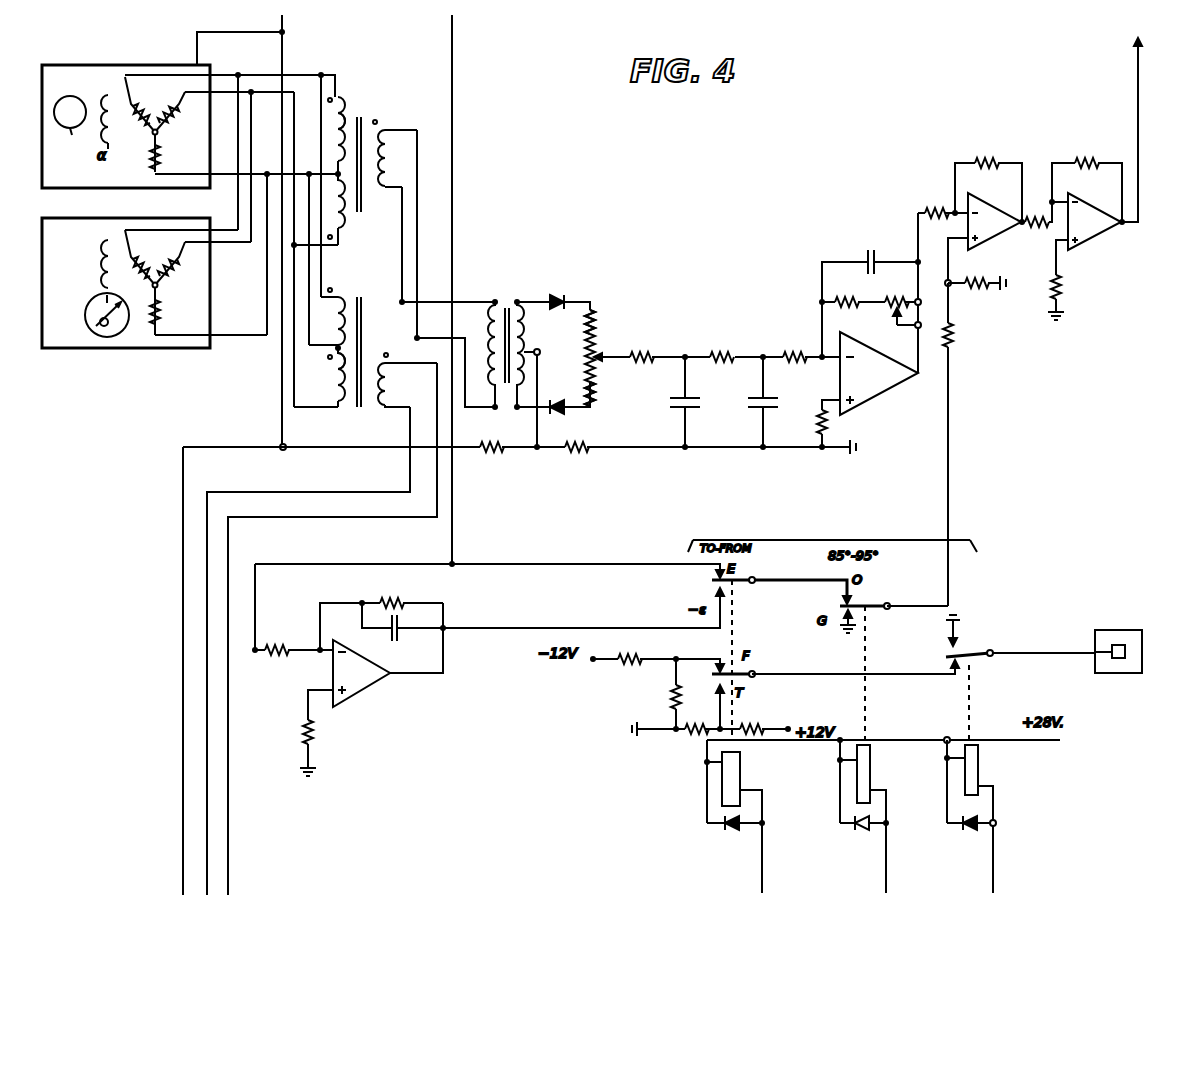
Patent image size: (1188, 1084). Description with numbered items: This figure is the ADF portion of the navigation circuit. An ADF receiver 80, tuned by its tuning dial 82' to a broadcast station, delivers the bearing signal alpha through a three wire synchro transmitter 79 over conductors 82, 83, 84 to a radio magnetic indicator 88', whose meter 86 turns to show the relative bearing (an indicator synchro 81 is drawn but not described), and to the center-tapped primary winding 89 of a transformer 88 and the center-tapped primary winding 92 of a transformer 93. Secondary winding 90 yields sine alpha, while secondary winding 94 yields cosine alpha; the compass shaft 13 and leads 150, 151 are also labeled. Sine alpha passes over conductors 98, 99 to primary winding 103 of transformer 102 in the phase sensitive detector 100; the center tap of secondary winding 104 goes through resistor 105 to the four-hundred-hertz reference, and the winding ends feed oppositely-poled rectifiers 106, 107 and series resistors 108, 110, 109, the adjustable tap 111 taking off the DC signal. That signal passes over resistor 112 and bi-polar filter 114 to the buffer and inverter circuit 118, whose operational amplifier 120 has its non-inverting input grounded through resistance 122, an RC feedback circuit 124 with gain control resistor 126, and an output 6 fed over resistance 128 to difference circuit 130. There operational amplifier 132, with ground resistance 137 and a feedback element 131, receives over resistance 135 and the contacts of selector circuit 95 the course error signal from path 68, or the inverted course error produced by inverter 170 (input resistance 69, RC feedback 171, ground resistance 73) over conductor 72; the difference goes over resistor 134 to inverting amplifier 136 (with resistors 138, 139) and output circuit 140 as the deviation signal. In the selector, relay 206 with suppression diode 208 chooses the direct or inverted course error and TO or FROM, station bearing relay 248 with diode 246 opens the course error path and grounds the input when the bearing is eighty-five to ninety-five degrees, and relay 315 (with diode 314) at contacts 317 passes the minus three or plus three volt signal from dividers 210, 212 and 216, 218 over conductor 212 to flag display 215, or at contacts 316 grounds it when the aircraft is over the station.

The ADF receiver 80 is at (126, 107).
The conductor 82 is at (241, 49).
The tuning dial 82' is at (69, 130).
The three wire synchro transmitter 79 is at (163, 124).
The conductor 83 is at (222, 97).
The conductor 84 is at (222, 178).
The radio magnetic indicator 88' is at (126, 313).
The RMI synchro 81 is at (161, 282).
The meter 86 is at (117, 314).
The transformer 88 is at (347, 159).
The center-tapped primary winding 89 is at (336, 136).
The secondary winding 90 is at (395, 148).
The center-tapped primary winding 92 is at (345, 328).
The transformer 93 is at (347, 335).
The secondary winding 94 is at (379, 406).
The conductor 98 is at (402, 244).
The conductor 99 is at (425, 235).
The phase sensitive detector 100 is at (563, 229).
The transformer 102 is at (494, 320).
The primary winding 103 is at (489, 314).
The secondary winding 104 is at (530, 332).
The resistor 105 is at (492, 454).
The rectifier 106 is at (576, 288).
The rectifier 107 is at (572, 405).
The series resistor 108 is at (604, 320).
The series resistor 109 is at (597, 391).
The resistor 110 is at (588, 354).
The adjustable tap 111 is at (600, 348).
The resistor 112 is at (640, 340).
The bi-polar filter 114 is at (720, 356).
The buffer and inverter circuit 118 is at (863, 280).
The operational amplifier 120 is at (880, 396).
The amplifier output 6 is at (908, 357).
The resistance 122 is at (820, 424).
The RC feedback circuit 124 is at (853, 292).
The gain control resistor 126 is at (880, 292).
The resistance 128 is at (938, 204).
The difference circuit 130 is at (957, 173).
The difference amplifier feedback resistor 131 is at (975, 180).
The operational amplifier 132 is at (985, 240).
The resistor 134 is at (1036, 235).
The resistance 135 is at (953, 330).
The operational amplifier 136 is at (1095, 245).
The resistance 137 is at (977, 299).
The resistor 138 is at (1051, 299).
The feedback resistor 139 is at (1100, 142).
The output circuit 140 is at (1133, 108).
The shaft 13 is at (183, 800).
The lead 150 is at (356, 510).
The lead 151 is at (356, 490).
The path 68 is at (620, 558).
The resistance 69 is at (292, 642).
The conductor 72 is at (610, 622).
The resistance 73 is at (306, 737).
The inverter 170 is at (372, 660).
The RC feedback circuit 171 is at (399, 606).
The selector circuit 95 is at (832, 536).
The voltage divider resistor 210 is at (608, 648).
The voltage divider resistor / conductor 212 is at (672, 692).
The voltage divider resistor 216 is at (667, 736).
The voltage divider resistor 218 is at (752, 728).
The relay 206 is at (722, 786).
The diode 208 is at (724, 854).
The station bearing relay 248 is at (856, 788).
The diode 246 is at (854, 854).
The diode 314 is at (972, 854).
The relay 315 is at (978, 768).
The contacts 316 is at (971, 634).
The contacts 317 is at (962, 662).
The flag display unit 215 is at (1124, 630).